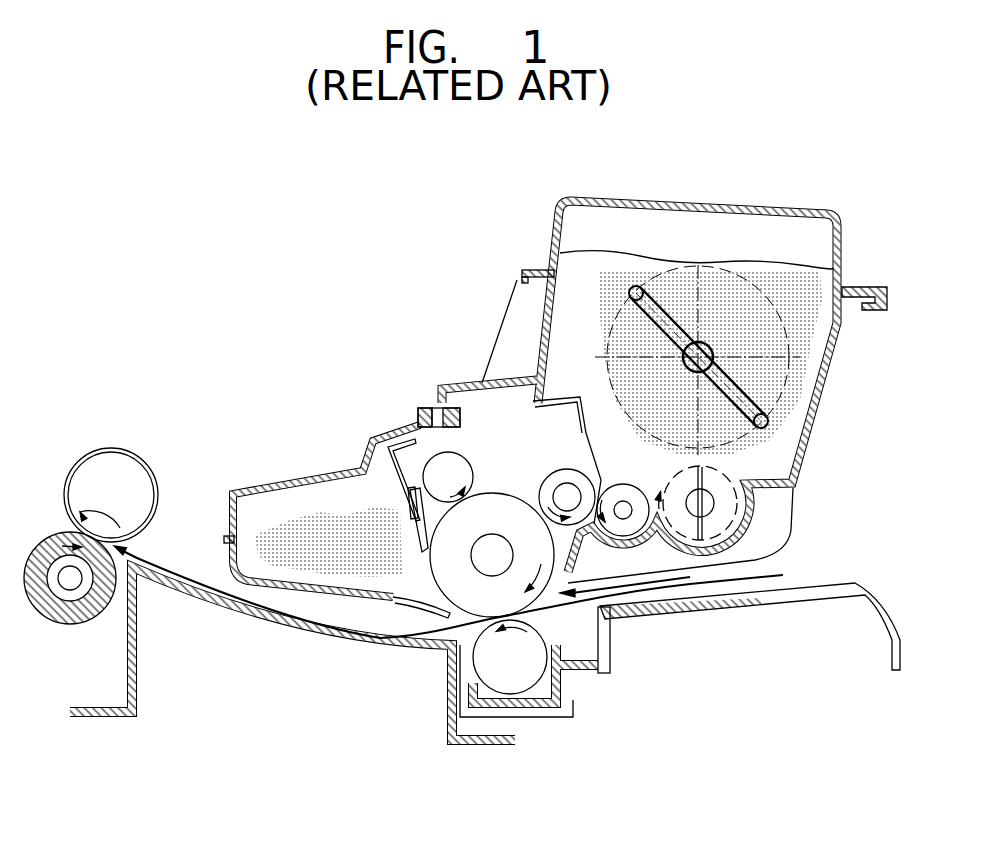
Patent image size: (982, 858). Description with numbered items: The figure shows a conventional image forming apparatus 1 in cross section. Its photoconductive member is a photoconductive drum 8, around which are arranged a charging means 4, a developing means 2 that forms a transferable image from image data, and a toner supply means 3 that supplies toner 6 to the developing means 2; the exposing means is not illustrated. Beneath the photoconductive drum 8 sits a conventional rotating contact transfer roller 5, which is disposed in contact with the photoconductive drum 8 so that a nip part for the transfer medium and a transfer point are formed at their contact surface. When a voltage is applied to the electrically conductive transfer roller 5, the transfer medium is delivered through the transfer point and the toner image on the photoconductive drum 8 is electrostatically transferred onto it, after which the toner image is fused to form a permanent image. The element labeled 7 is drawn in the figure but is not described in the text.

The image forming apparatus 1 is at (357, 424).
The developing means 2 is at (581, 508).
The toner supply means 3 is at (637, 517).
The charging means 4 is at (440, 465).
The transfer roller 5 is at (472, 665).
The toner 6 is at (784, 283).
The partition wall 7 is at (587, 452).
The photoconductive drum 8 is at (443, 538).